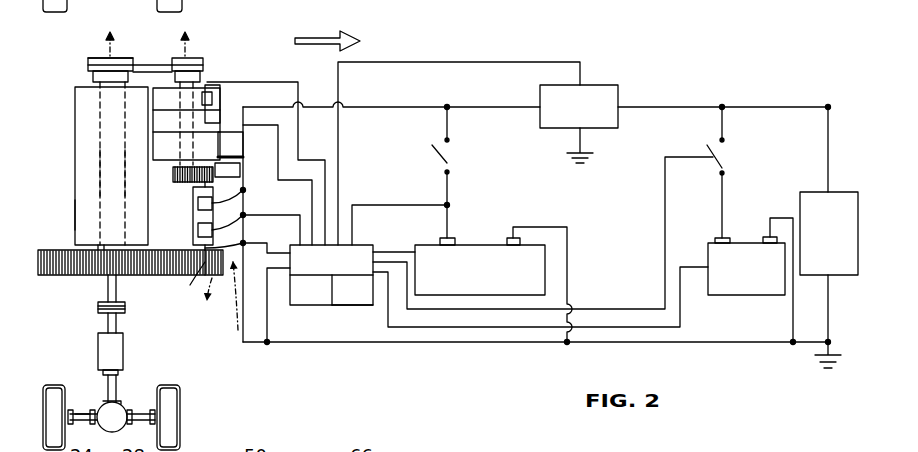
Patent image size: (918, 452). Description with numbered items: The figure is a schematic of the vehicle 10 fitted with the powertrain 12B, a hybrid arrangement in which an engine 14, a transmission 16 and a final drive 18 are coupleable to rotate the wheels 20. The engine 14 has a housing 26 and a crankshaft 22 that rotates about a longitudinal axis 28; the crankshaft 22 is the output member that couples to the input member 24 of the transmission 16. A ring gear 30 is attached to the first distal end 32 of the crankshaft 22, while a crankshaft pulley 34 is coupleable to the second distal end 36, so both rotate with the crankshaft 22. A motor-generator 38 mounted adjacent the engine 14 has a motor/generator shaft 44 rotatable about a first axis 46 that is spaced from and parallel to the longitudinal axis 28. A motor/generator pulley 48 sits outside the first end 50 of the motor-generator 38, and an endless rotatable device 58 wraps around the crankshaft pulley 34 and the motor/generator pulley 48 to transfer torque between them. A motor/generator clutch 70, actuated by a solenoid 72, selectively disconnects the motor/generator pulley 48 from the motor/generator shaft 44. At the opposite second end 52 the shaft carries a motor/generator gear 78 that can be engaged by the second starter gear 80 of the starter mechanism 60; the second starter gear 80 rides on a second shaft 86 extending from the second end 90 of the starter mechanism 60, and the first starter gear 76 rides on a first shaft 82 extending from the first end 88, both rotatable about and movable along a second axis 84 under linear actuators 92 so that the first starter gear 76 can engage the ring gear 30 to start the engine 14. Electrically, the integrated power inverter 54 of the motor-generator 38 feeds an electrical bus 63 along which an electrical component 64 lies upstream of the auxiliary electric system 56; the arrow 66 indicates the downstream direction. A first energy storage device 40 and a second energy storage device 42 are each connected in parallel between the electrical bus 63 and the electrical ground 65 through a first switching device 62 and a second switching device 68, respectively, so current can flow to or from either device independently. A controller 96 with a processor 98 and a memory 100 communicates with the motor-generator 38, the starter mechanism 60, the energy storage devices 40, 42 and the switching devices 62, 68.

The vehicle 10 is at (212, 380).
The powertrain 12B is at (770, 50).
The engine 14 is at (62, 162).
The transmission 16 is at (124, 355).
The final drive 18 is at (103, 400).
The wheels 20 is at (181, 428).
The crankshaft 22 is at (66, 108).
The input member 24 is at (118, 322).
The housing 26 is at (83, 218).
The longitudinal axis 28 is at (118, 50).
The ring gear 30 is at (58, 277).
The first distal end 32 is at (98, 249).
The crankshaft pulley 34 is at (100, 58).
The second distal end 36 is at (93, 78).
The motor-generator 38 is at (220, 50).
The first energy storage device 40 is at (480, 243).
The second energy storage device 42 is at (737, 296).
The motor/generator shaft 44 is at (195, 56).
The first axis 46 is at (183, 52).
The motor/generator pulley 48 is at (210, 88).
The first end 50 is at (162, 72).
The second end 52 is at (168, 162).
The integrated power inverter 54 is at (342, 75).
The auxiliary electric system 56 is at (835, 192).
The endless rotatable device 58 is at (92, 60).
The starter mechanism 60 is at (227, 297).
The first switching device 62 is at (455, 158).
The electrical bus 63 is at (475, 107).
The electrical component 64 is at (595, 85).
The electrical ground 65 is at (600, 343).
The arrow 66 is at (324, 35).
The second switching device 68 is at (730, 158).
The motor/generator clutch 70 is at (212, 203).
The solenoid 72 is at (221, 103).
The first starter gear 76 is at (190, 285).
The motor/generator gear 78 is at (190, 185).
The second starter gear 80 is at (212, 165).
The first shaft 82 is at (192, 275).
The second axis 84 is at (204, 310).
The second shaft 86 is at (212, 230).
The first end 88 is at (250, 222).
The second end 90 is at (196, 222).
The linear actuator 92 is at (205, 245).
The controller 96 is at (308, 294).
The processor 98 is at (316, 290).
The memory 100 is at (352, 292).